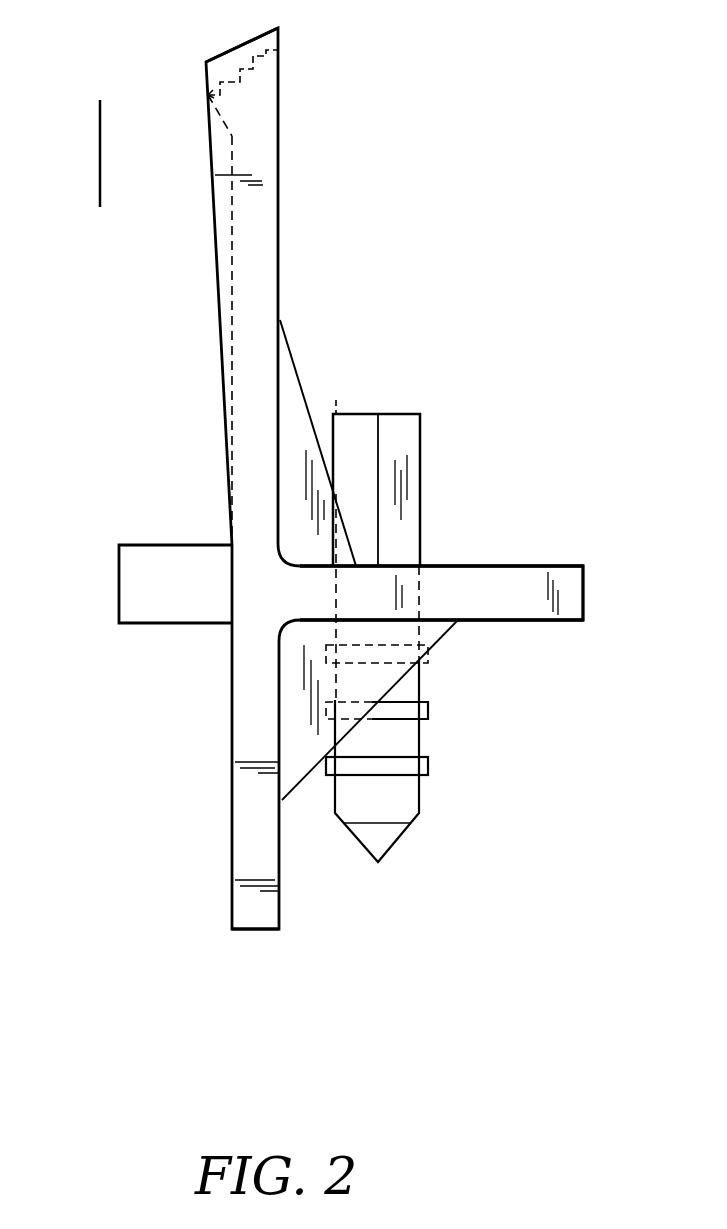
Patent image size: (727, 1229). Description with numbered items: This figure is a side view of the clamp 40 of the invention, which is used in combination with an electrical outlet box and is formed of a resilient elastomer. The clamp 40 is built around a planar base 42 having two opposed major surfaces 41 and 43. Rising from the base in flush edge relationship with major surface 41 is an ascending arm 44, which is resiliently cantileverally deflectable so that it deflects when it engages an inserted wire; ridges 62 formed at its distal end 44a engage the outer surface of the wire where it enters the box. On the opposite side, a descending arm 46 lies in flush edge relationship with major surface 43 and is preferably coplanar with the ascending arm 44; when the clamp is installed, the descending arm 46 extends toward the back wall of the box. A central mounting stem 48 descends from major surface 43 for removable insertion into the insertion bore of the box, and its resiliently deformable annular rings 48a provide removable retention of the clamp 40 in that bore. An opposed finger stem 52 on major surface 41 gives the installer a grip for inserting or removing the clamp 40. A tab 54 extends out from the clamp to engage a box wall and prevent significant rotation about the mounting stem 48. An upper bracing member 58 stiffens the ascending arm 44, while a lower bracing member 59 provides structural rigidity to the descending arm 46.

The clamp 40 is at (100, 144).
The major surface 41 is at (507, 565).
The planar base 42 is at (585, 586).
The major surface 43 is at (517, 623).
The ascending arm 44 is at (260, 383).
The distal end 44a is at (280, 104).
The descending arm 46 is at (280, 903).
The central mounting stem 48 is at (421, 793).
The annular ring 48a is at (423, 720).
The finger stem 52 is at (421, 442).
The tab 54 is at (119, 585).
The upper bracing member 58 is at (294, 364).
The lower bracing member 59 is at (297, 787).
The ridge 62 is at (252, 65).